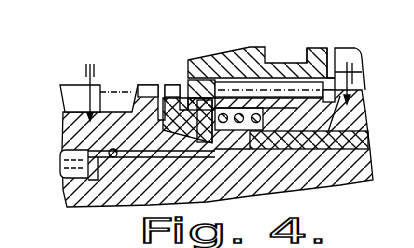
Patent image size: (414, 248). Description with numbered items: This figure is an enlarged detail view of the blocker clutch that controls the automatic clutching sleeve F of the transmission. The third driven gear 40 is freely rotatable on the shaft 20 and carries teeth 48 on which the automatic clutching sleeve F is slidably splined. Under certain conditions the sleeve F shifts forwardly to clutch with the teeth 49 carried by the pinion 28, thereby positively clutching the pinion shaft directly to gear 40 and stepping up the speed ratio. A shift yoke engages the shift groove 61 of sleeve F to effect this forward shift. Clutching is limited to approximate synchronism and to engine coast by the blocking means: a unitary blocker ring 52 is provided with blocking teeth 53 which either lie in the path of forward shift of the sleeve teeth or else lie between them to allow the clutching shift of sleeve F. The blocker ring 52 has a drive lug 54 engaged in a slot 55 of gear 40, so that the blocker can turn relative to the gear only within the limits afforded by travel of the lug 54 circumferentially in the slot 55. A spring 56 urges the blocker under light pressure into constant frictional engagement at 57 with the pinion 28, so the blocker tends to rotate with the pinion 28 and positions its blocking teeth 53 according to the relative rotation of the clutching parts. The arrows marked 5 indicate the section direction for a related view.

The shaft 20 is at (373, 181).
The pinion 28 is at (62, 84).
The teeth 49 is at (147, 84).
The section direction arrows 5 is at (219, 103).
The blocker ring 52 is at (174, 150).
The slot 55 is at (214, 58).
The shift groove 61 is at (301, 62).
The automatic clutching sleeve F is at (225, 58).
The drive lug 54 is at (200, 98).
The teeth 48 is at (275, 88).
The third driven gear 40 is at (346, 50).
The blocking teeth 53 is at (165, 125).
The frictional engagement 57 is at (197, 150).
The spring 56 is at (278, 118).